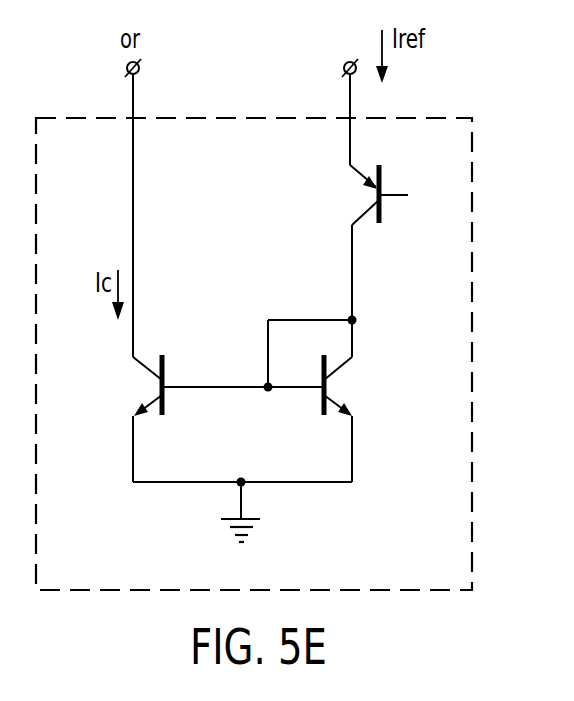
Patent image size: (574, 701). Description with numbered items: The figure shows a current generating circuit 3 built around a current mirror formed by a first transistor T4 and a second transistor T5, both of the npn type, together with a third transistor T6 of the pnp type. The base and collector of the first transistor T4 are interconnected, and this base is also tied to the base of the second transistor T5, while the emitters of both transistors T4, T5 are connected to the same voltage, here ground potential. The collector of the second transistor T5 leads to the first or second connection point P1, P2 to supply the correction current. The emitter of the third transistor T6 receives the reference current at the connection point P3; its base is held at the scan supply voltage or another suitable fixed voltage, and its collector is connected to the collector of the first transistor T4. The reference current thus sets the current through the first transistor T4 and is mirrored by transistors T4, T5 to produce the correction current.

The current generating circuit 3 is at (473, 158).
The first transistor T4 is at (321, 400).
The second transistor T5 is at (165, 400).
The third transistor T6 is at (360, 195).
The first connection point P1 is at (90, 39).
The second connection point P2 is at (182, 39).
The connection point P3 is at (349, 39).